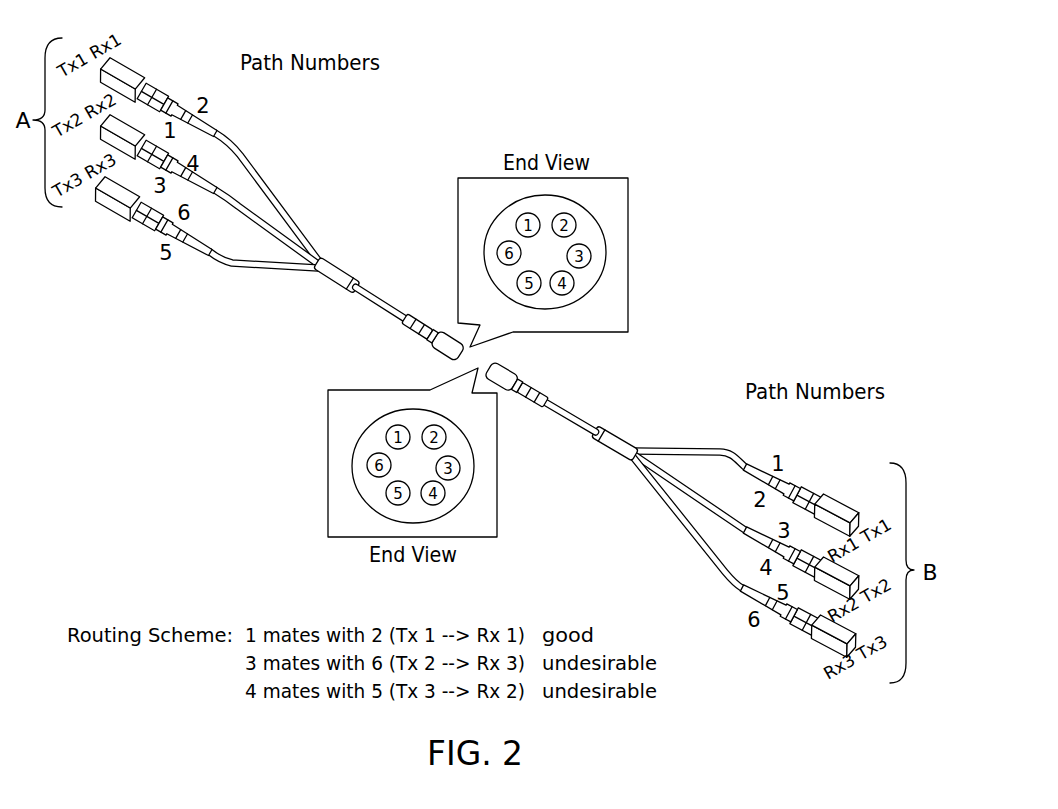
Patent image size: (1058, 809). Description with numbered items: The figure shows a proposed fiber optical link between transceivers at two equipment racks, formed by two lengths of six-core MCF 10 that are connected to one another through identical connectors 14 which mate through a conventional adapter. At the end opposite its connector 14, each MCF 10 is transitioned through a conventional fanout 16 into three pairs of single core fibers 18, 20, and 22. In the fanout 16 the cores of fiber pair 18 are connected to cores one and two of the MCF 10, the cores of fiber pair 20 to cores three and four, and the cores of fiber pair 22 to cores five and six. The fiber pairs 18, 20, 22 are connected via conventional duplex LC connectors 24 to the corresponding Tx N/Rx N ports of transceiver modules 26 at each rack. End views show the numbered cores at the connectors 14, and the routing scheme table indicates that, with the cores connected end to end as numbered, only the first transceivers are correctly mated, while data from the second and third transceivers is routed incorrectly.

The six-core MCF 10 is at (476, 367).
The connector 14 is at (447, 350).
The fanout 16 is at (320, 176).
The fiber pair 18 is at (253, 168).
The fiber pair 20 is at (202, 197).
The fiber pair 22 is at (226, 268).
The duplex LC connector 24 is at (178, 92).
The transceiver module 26 is at (133, 60).